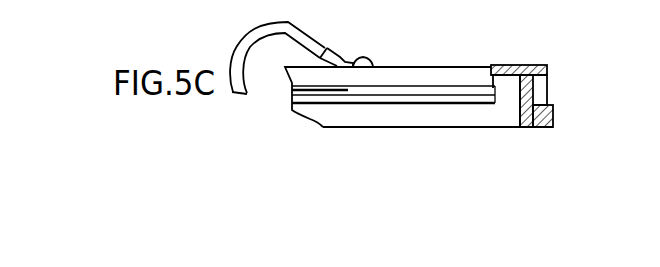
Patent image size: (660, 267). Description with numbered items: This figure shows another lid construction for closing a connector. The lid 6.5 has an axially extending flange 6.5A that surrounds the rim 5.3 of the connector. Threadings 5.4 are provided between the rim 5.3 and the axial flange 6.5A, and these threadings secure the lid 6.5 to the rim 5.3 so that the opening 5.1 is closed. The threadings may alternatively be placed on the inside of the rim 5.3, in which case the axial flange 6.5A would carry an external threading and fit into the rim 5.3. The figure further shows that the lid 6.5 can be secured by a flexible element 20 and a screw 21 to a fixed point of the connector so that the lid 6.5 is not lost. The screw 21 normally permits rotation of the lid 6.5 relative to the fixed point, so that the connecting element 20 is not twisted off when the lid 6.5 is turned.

The flexible element 20 is at (246, 41).
The screw 21 is at (364, 58).
The lid 6.5 is at (445, 65).
The axially extending flange 6.5A is at (537, 80).
The threadings 5.4 is at (553, 117).
The opening 5.1 is at (462, 117).
The rim 5.3 is at (520, 125).